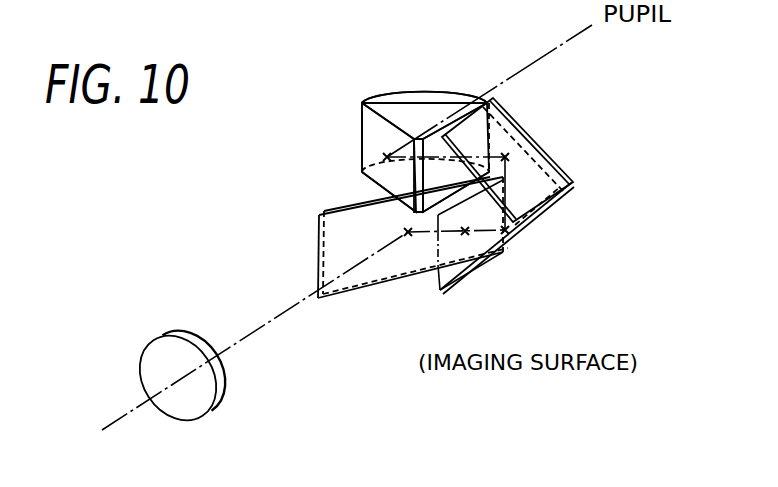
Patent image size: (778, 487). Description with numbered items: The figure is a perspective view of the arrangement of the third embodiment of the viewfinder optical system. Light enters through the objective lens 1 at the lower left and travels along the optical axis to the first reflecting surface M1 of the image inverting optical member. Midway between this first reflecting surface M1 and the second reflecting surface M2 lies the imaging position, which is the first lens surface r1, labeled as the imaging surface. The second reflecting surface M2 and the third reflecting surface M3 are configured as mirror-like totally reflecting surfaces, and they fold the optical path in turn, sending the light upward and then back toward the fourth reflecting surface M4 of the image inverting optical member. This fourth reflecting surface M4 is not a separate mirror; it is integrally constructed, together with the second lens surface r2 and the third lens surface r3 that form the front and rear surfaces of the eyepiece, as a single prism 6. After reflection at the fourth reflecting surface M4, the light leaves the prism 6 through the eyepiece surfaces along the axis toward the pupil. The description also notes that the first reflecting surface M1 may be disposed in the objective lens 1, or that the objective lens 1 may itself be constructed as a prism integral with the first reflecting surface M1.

The objective lens 1 is at (205, 393).
The prism 6 is at (427, 112).
The first reflecting surface M1 is at (316, 242).
The second reflecting surface M2 is at (567, 184).
The third reflecting surface M3 is at (558, 162).
The fourth reflecting surface M4 is at (361, 126).
The first lens surface r1 is at (442, 289).
The second lens surface r2 is at (478, 98).
The third lens surface r3 is at (401, 88).